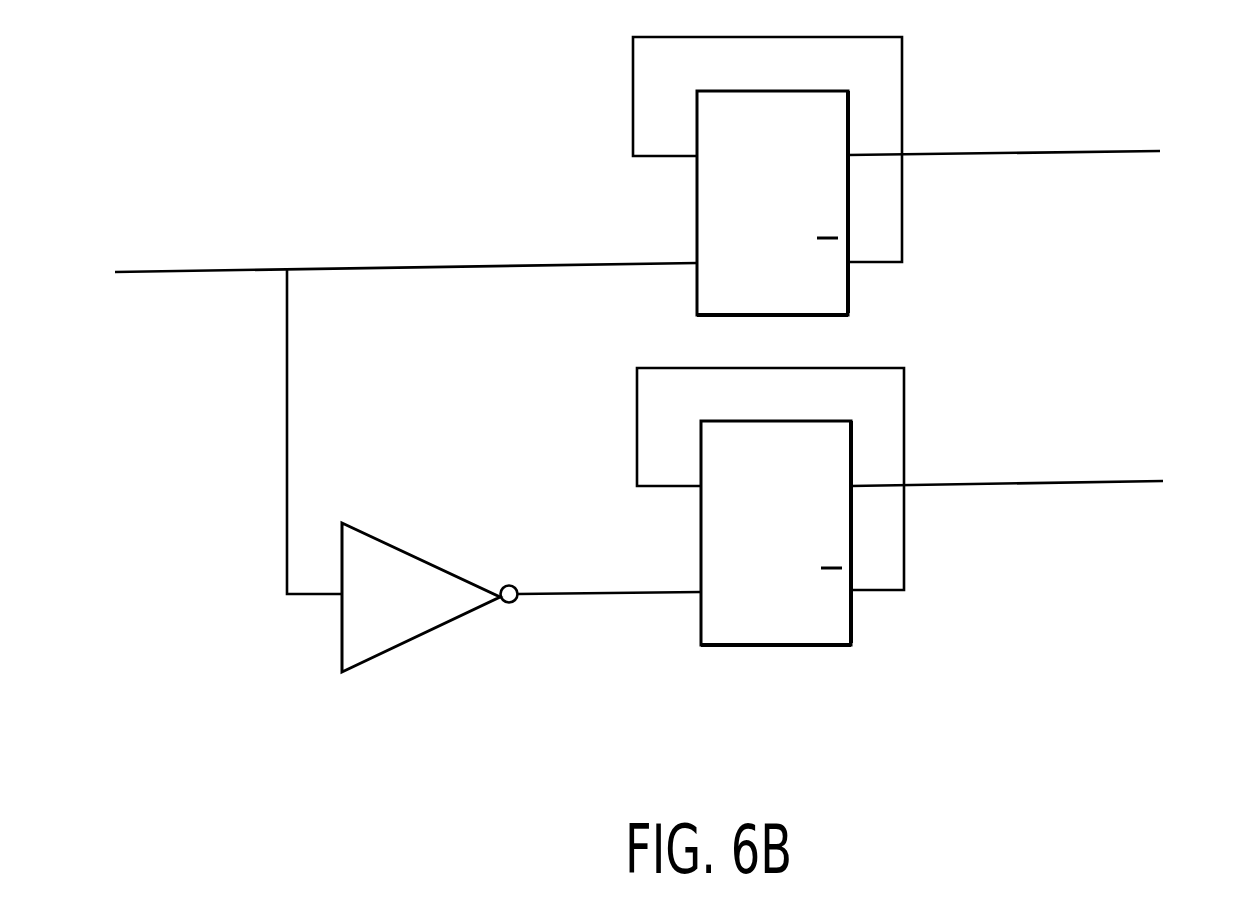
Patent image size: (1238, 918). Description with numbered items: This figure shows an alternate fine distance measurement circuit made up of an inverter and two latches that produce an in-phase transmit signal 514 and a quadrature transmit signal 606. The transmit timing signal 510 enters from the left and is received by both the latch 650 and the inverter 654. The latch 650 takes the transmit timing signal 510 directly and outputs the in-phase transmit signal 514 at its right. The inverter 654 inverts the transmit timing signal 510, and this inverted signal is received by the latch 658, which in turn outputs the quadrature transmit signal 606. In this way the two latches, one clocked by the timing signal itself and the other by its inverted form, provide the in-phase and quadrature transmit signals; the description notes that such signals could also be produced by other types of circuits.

The transmit timing signal 510 is at (193, 272).
The latch 650 is at (848, 303).
The TX(I) signal 514 is at (1042, 154).
The inverter 654 is at (397, 648).
The latch 658 is at (851, 633).
The TX(Q) signal 606 is at (1045, 483).